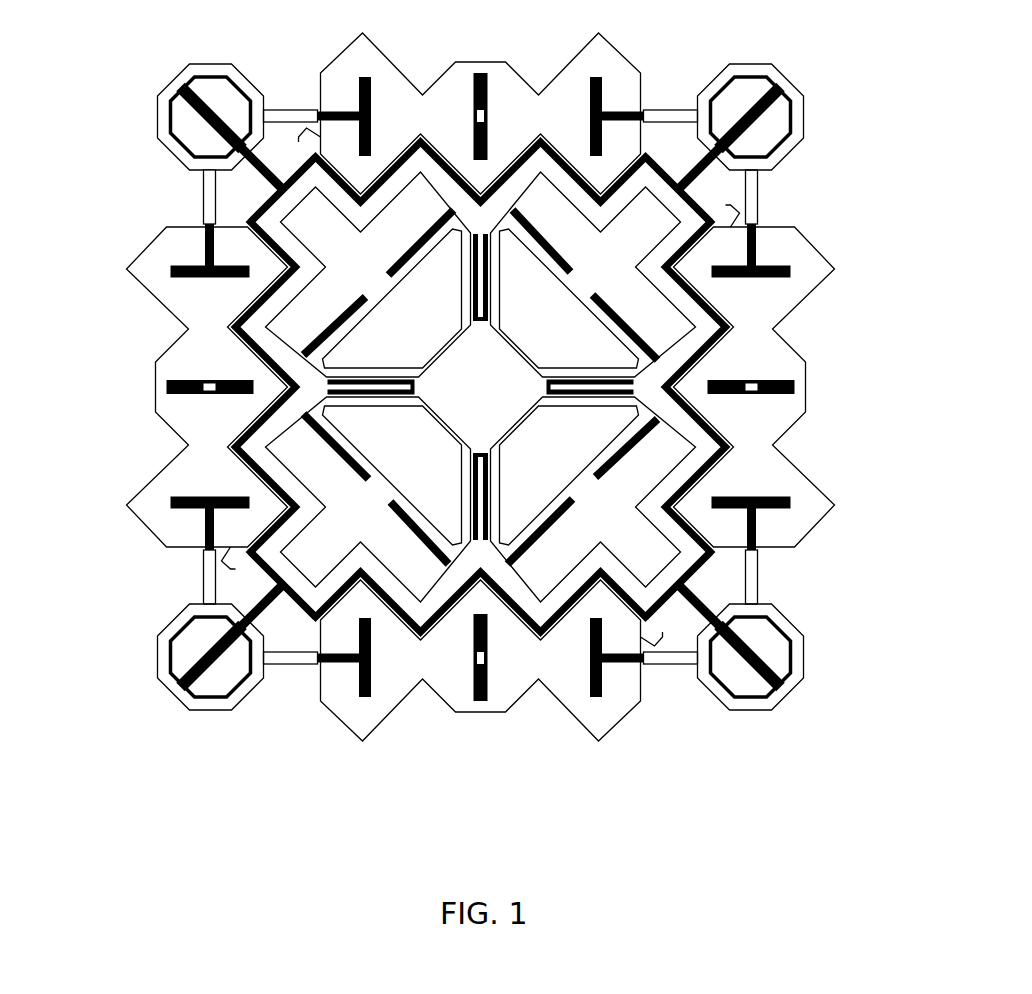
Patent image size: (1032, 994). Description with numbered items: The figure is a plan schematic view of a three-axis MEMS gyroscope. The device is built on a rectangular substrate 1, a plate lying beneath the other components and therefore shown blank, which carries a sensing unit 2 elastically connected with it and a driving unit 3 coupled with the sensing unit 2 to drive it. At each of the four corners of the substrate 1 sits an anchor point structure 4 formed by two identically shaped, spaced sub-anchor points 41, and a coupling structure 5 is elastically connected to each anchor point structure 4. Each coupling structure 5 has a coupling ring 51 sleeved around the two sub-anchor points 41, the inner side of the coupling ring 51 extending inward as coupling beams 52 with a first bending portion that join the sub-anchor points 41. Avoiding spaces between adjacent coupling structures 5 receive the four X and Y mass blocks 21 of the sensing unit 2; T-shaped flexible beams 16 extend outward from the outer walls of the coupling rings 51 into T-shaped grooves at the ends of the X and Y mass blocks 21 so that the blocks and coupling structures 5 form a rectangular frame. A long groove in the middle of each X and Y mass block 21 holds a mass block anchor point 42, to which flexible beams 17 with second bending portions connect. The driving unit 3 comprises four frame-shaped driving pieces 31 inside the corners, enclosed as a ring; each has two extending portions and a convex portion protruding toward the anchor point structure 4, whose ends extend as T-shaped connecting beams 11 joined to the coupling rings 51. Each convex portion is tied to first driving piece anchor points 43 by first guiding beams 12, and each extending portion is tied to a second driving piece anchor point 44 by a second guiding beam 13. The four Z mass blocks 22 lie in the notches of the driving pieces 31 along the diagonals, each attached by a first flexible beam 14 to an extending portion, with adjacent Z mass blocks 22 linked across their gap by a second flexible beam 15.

The substrate 1 is at (218, 80).
The T-shaped connecting beam 11 is at (320, 113).
The first guiding beam 12 is at (357, 200).
The second guiding beam 13 is at (450, 200).
The first flexible beam 14 is at (323, 318).
The second flexible beam 15 is at (330, 373).
The sensing unit 2 is at (190, 340).
The X and Y mass block 21 is at (187, 362).
The Z mass block 22 is at (345, 412).
The driving unit 3 is at (263, 446).
The driving piece 31 is at (273, 470).
The anchor point structure 4 is at (220, 560).
The sub-anchor point 41 is at (210, 622).
The T-shaped flexible beam 16 is at (312, 652).
The flexible beam 17 is at (473, 697).
The mass block anchor point 42 is at (483, 565).
The second driving piece anchor point 44 is at (481, 590).
The first driving piece anchor point 43 is at (645, 650).
The coupling structure 5 is at (705, 672).
The coupling ring 51 is at (778, 693).
The coupling beam 52 is at (783, 677).